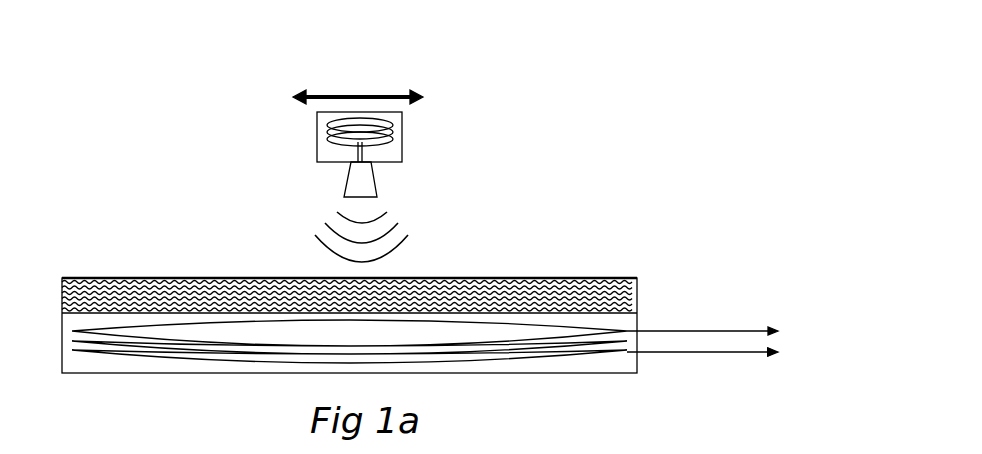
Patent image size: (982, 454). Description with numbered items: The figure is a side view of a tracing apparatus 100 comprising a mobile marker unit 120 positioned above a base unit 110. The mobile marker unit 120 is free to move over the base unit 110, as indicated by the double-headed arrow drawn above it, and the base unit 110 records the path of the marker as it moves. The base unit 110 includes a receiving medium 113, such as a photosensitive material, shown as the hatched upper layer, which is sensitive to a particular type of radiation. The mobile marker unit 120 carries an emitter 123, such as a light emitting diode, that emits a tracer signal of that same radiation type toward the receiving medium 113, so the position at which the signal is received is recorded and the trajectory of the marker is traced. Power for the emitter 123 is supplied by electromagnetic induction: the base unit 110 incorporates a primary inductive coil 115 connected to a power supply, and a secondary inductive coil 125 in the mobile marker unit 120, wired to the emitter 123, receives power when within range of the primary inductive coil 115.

The tracing apparatus 100 is at (86, 111).
The base unit 110 is at (760, 282).
The receiving medium 113 is at (637, 278).
The primary inductive coil 115 is at (590, 357).
The mobile marker unit 120 is at (466, 121).
The emitter 123 is at (368, 181).
The secondary inductive coil 125 is at (330, 128).